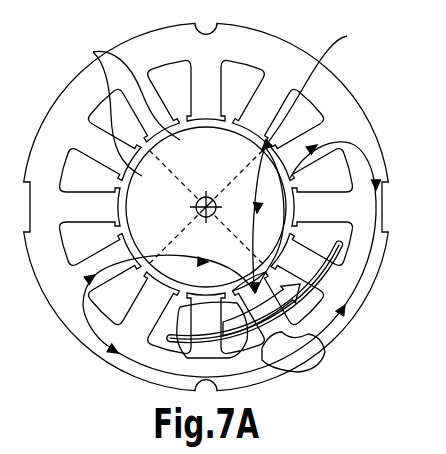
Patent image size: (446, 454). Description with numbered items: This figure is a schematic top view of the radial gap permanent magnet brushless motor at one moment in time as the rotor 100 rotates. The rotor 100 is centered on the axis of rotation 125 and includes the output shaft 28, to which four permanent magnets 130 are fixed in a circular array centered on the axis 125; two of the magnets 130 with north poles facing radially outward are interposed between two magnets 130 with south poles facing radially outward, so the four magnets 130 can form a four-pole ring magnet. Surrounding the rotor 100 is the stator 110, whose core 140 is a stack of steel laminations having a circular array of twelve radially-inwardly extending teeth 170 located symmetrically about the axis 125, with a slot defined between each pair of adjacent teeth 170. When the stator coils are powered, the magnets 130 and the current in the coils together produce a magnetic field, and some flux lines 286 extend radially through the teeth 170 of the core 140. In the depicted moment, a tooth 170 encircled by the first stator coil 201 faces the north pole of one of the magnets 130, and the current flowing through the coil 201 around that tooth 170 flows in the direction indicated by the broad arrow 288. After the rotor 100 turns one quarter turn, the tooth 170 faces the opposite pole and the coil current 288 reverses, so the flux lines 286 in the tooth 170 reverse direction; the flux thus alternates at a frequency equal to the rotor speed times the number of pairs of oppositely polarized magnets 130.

The output shaft 28 is at (204, 198).
The rotor 100 is at (319, 158).
The stator 110 is at (366, 97).
The axis of rotation 125 is at (193, 218).
The permanent magnets 130 is at (93, 52).
The core 140 is at (378, 138).
The teeth 170 is at (166, 324).
The first stator coil 201 is at (330, 285).
The flux lines 286 is at (320, 356).
The broad arrow (coil current direction) 288 is at (236, 352).